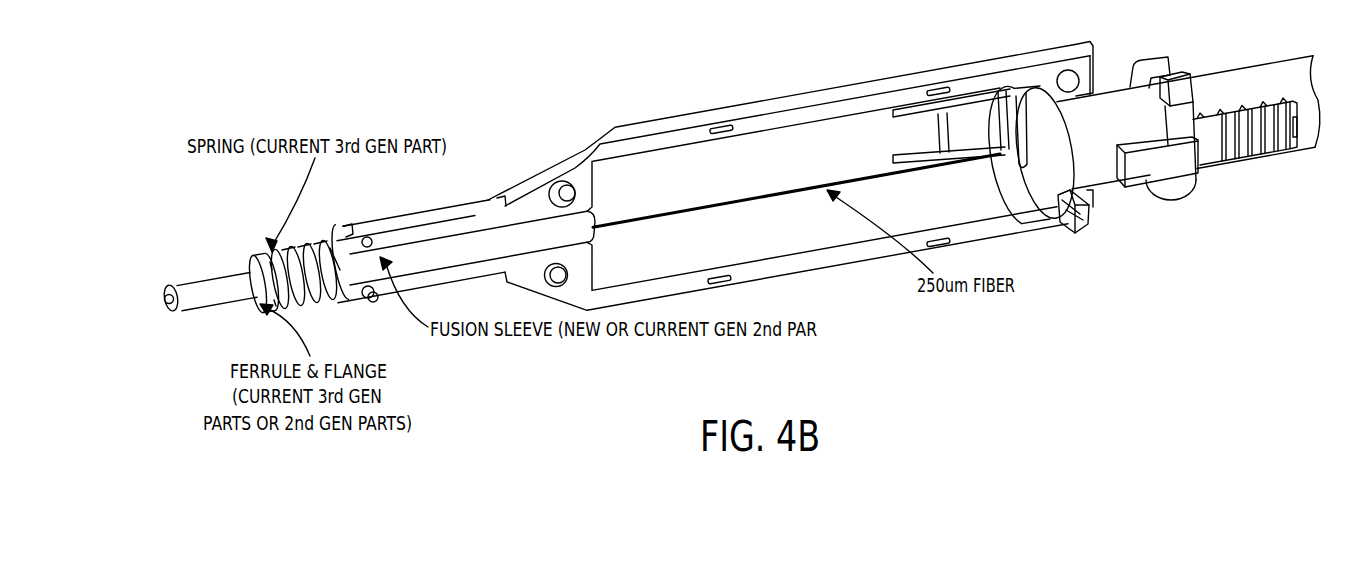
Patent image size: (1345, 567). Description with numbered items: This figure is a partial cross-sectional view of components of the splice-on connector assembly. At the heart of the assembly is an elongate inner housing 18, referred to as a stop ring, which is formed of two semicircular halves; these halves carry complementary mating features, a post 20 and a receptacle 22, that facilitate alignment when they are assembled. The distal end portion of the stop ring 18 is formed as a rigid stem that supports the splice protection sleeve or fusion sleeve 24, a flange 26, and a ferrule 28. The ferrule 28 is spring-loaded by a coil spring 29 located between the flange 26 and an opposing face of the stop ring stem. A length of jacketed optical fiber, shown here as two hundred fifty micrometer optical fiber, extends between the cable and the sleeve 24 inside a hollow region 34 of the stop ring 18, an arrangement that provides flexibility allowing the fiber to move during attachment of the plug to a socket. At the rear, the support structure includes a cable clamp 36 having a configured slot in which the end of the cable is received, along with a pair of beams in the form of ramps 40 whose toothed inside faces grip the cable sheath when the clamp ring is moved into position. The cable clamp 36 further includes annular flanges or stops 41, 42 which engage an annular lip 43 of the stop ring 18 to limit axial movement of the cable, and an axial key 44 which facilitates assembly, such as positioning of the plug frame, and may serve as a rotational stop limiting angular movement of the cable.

The inner housing 18 is at (757, 270).
The post 20 is at (566, 186).
The receptacle 22 is at (568, 281).
The splice protection sleeve 24 is at (443, 257).
The flange 26 is at (318, 241).
The ferrule 28 is at (207, 300).
The coil spring 29 is at (332, 298).
The hollow region 34 is at (833, 238).
The cable clamp 36 is at (1108, 97).
The ramps 40 is at (1238, 155).
The stop 41 is at (1053, 208).
The stop 42 is at (1185, 190).
The annular lip 43 is at (1092, 62).
The axial key 44 is at (1145, 172).